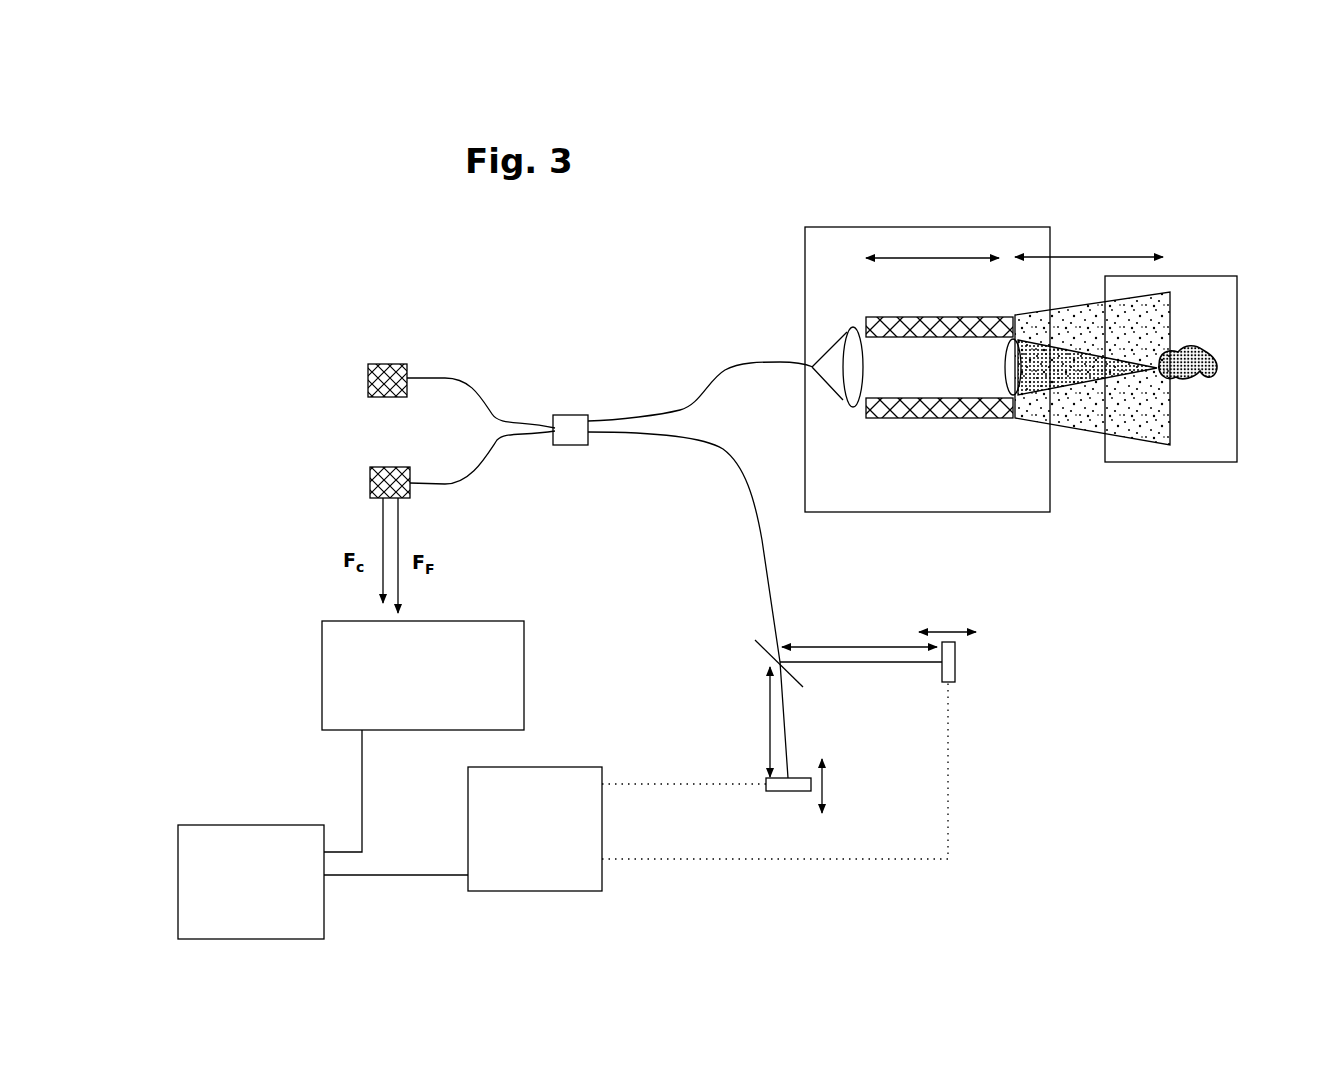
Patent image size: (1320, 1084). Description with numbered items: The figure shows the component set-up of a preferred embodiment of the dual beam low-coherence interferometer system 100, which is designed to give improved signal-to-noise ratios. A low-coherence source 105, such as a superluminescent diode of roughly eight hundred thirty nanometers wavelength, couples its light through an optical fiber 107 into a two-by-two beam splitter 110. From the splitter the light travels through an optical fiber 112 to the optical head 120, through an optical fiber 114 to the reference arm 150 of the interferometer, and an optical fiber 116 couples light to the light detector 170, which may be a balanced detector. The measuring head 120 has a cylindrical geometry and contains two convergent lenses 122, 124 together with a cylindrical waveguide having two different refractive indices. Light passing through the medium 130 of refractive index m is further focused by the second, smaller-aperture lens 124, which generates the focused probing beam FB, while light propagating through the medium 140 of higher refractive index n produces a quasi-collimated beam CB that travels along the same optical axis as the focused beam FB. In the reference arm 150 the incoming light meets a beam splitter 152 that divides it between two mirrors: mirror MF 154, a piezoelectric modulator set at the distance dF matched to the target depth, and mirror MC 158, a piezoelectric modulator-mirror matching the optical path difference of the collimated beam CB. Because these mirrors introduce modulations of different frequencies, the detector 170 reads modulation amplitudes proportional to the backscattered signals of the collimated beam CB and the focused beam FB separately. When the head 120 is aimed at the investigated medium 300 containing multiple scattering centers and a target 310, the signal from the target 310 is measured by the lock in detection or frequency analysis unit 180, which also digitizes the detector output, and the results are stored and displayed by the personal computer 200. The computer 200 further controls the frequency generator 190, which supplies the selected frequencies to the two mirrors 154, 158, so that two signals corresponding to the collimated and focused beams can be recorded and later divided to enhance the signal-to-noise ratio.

The dual beam low-coherence interferometer system 100 is at (313, 257).
The low-coherence source 105 is at (392, 363).
The optical fiber 107 is at (473, 380).
The 2×2 beam splitter 110 is at (570, 412).
The optical fiber 112 is at (718, 375).
The optical fiber 114 is at (763, 518).
The optical fiber 116 is at (475, 470).
The optical head 120 is at (822, 247).
The convergent lens 122 is at (853, 388).
The convergent lens 124 is at (1003, 360).
The medium 130 is at (892, 387).
The medium 140 is at (965, 418).
The reference arm 150 is at (733, 652).
The beam splitter 152 is at (800, 669).
The mirror MF 154 is at (797, 778).
The mirror MC 158 is at (952, 682).
The light detector 170 is at (373, 467).
The lock in detection or frequency analysis 180 is at (423, 675).
The frequency generator 190 is at (708, 786).
The personal computer 200 is at (323, 834).
The investigated medium 300 is at (1207, 303).
The target 310 is at (1208, 377).
The collimated beam CB is at (1075, 323).
The focused probing beam FB is at (1073, 368).